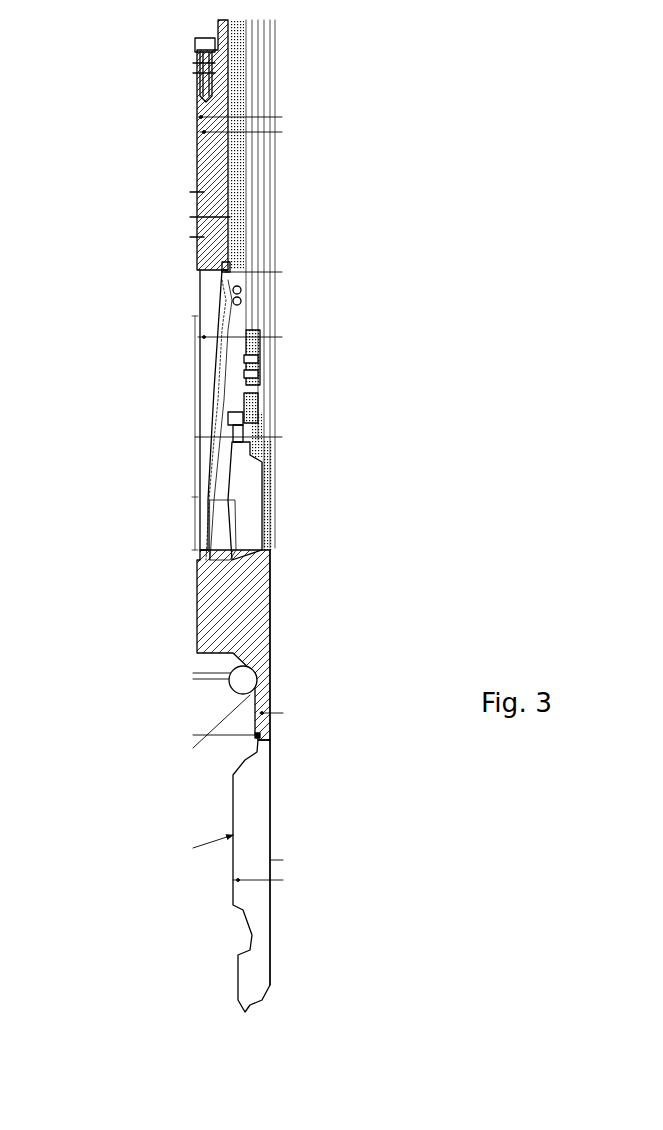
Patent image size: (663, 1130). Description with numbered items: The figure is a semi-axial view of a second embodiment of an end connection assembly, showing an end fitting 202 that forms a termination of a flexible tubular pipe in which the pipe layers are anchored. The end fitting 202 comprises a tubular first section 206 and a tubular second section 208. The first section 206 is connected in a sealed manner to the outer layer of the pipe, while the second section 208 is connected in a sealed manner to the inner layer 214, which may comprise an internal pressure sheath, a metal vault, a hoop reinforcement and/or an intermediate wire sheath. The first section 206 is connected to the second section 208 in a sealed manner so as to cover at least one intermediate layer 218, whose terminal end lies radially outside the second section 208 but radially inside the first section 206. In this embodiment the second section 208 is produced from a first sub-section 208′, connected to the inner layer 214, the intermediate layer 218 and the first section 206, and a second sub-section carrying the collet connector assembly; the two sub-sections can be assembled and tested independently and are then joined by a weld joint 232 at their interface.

The end fitting 202 is at (287, 107).
The first section 206 is at (178, 240).
The inner layer 214 is at (265, 400).
The intermediate layer 218 is at (222, 397).
The second section 208 is at (302, 692).
The first sub-section 208′ is at (250, 597).
The weld joint 232 is at (253, 733).